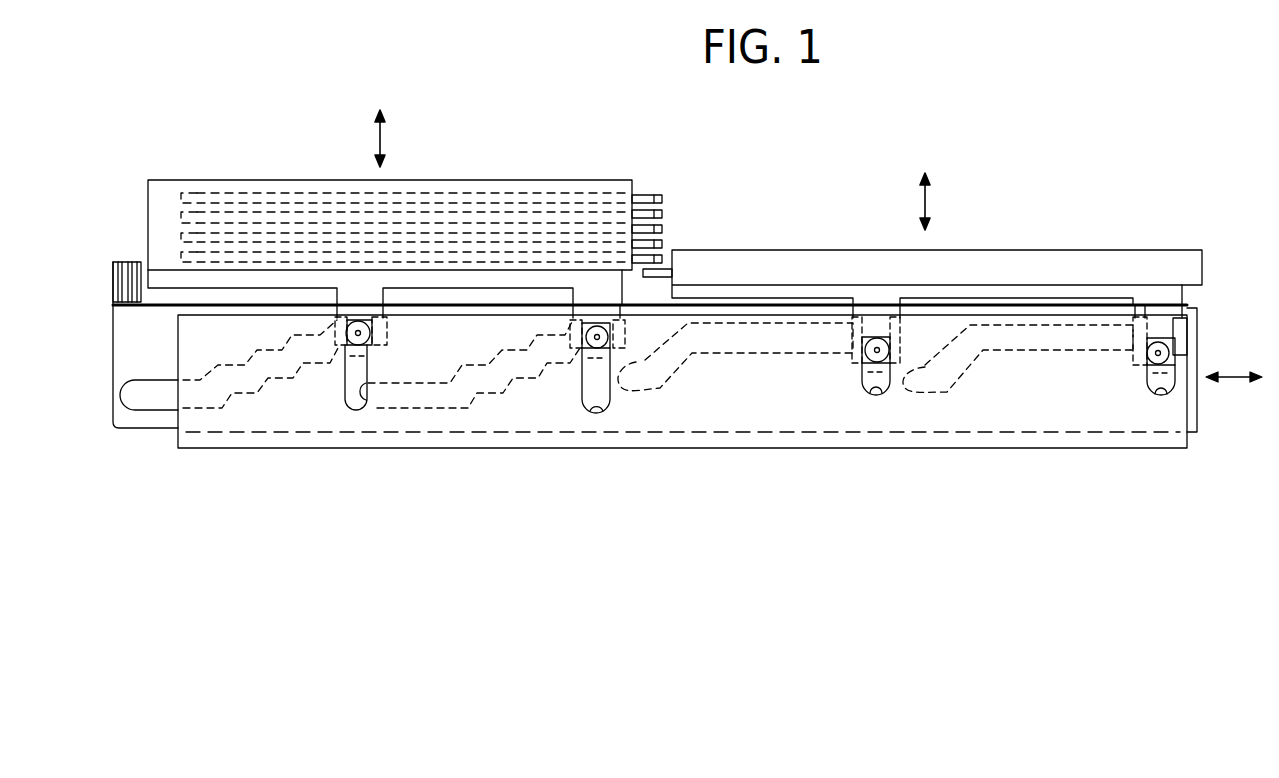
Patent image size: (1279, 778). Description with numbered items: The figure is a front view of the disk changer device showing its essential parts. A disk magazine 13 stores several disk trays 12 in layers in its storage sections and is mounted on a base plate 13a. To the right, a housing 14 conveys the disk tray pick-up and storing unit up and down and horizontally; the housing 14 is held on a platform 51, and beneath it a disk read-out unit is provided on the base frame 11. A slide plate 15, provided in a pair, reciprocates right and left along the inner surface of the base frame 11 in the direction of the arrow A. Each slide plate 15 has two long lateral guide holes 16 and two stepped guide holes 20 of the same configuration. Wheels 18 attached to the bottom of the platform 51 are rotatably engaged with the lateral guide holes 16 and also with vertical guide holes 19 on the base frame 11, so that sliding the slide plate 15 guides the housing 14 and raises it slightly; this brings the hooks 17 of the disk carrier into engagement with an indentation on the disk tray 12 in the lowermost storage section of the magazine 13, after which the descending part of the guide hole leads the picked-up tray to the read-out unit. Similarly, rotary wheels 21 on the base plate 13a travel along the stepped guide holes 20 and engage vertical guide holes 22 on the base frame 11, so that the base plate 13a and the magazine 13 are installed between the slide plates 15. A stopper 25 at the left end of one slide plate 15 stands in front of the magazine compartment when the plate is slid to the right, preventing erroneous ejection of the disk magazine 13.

The base frame 11 is at (863, 447).
The disk tray 12 is at (658, 205).
The disk magazine 13 is at (503, 181).
The base plate 13a is at (163, 277).
The housing 14 is at (1040, 250).
The slide plate 15 is at (125, 353).
The long lateral guide hole 16 is at (748, 352).
The hook 17 is at (660, 270).
The wheel 18 is at (863, 362).
The vertical guide hole 19 is at (887, 393).
The stepped guide hole 20 is at (228, 408).
The rotary wheel 21 is at (348, 345).
The vertical guide hole 22 is at (355, 410).
The stopper 25 is at (113, 292).
The platform 51 is at (872, 292).
The arrow A is at (1233, 379).